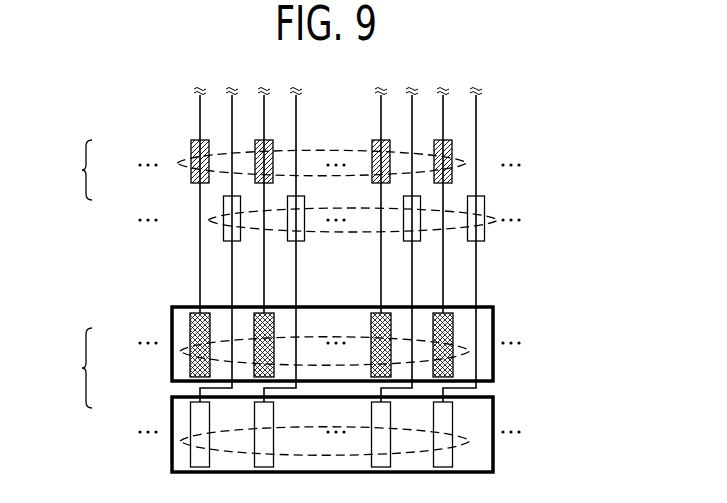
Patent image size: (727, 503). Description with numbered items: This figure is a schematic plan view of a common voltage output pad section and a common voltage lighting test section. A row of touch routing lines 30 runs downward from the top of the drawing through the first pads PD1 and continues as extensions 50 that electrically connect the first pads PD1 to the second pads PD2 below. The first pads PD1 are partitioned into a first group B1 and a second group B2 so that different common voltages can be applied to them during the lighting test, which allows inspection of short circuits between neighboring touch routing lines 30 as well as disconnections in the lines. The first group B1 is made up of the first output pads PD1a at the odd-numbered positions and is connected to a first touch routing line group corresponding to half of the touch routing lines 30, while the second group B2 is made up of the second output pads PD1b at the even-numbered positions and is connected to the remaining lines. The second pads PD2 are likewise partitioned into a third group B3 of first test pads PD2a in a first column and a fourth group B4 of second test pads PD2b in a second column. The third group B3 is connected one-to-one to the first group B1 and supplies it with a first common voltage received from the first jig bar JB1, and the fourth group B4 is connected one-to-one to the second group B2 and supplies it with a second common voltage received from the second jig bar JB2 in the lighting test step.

The touch routing lines 30 is at (476, 112).
The extensions of the touch routing lines 50 is at (476, 270).
The first pads PD1 is at (67, 170).
The first output pads PD1a is at (190, 153).
The second output pads PD1b is at (223, 211).
The first group B1 is at (462, 160).
The second group B2 is at (492, 216).
The first jig bar JB1 is at (493, 360).
The second jig bar JB2 is at (493, 450).
The second pads PD2 is at (67, 368).
The first test pads PD2a is at (190, 337).
The second test pads PD2b is at (192, 420).
The third group B3 is at (462, 347).
The fourth group B4 is at (462, 437).